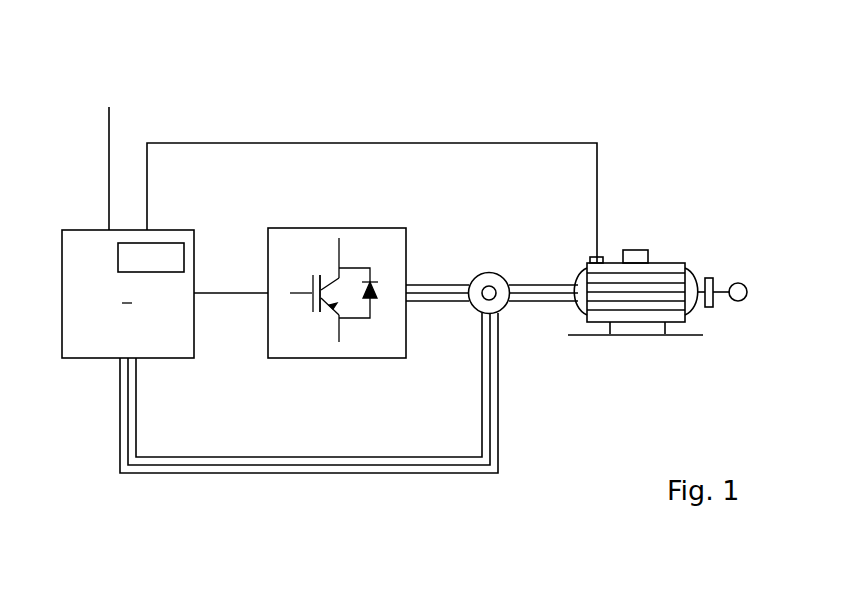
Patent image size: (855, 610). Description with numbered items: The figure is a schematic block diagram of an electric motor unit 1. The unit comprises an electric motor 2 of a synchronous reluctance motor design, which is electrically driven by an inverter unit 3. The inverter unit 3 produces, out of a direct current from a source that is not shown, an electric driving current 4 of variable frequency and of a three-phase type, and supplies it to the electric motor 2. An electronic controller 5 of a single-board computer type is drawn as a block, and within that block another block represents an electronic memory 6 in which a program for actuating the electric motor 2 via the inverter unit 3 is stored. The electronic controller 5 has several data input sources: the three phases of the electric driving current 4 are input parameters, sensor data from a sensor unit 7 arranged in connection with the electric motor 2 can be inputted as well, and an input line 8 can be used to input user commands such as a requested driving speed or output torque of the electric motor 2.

The electric motor unit 1 is at (689, 128).
The electric motor 2 is at (664, 259).
The inverter unit 3 is at (357, 228).
The electric driving current 4 is at (454, 271).
The electronic controller 5 is at (165, 268).
The electronic memory 6 is at (165, 243).
The sensor unit 7 is at (593, 258).
The input line 8 is at (108, 177).